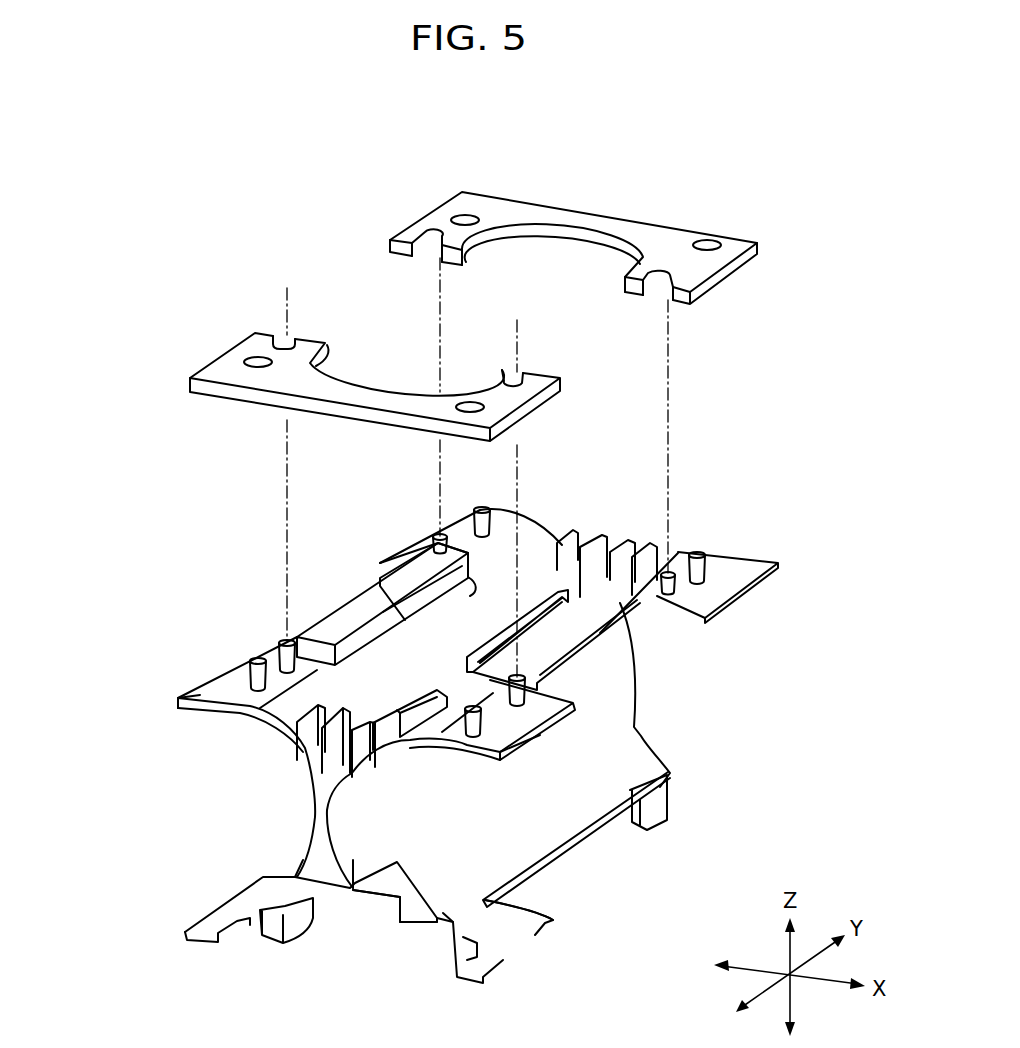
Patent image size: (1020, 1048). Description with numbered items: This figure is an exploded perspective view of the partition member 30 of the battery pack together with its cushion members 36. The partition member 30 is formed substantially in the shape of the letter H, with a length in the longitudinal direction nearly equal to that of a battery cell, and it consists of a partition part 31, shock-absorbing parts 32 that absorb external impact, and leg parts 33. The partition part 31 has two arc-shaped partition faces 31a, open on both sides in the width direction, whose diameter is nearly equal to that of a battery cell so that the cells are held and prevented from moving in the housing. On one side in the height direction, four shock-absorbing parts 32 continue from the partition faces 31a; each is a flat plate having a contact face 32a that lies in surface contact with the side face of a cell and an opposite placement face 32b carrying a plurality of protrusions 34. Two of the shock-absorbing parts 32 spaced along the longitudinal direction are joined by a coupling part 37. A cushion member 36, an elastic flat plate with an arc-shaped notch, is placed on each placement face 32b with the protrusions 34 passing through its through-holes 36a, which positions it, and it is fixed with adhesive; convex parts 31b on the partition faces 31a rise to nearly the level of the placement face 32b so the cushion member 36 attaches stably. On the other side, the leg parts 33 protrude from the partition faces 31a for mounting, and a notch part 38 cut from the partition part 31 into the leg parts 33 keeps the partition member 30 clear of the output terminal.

The partition member 30 is at (135, 684).
The partition part 31 is at (327, 857).
The partition faces 31a is at (312, 803).
The convex parts 31b is at (615, 545).
The shock-absorbing parts 32 is at (233, 680).
The contact face 32a is at (203, 718).
The placement face 32b is at (200, 695).
The leg parts 33 is at (257, 933).
The protrusions 34 is at (285, 641).
The cushion member 36 is at (549, 206).
The through-holes 36a is at (465, 216).
The coupling part 37 is at (350, 607).
The notch part 38 is at (383, 883).